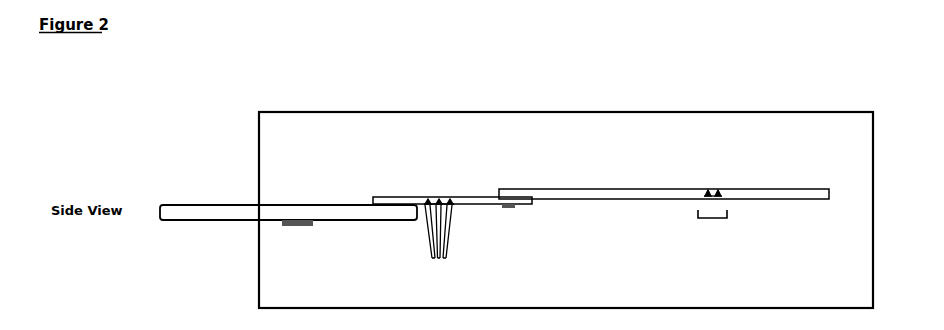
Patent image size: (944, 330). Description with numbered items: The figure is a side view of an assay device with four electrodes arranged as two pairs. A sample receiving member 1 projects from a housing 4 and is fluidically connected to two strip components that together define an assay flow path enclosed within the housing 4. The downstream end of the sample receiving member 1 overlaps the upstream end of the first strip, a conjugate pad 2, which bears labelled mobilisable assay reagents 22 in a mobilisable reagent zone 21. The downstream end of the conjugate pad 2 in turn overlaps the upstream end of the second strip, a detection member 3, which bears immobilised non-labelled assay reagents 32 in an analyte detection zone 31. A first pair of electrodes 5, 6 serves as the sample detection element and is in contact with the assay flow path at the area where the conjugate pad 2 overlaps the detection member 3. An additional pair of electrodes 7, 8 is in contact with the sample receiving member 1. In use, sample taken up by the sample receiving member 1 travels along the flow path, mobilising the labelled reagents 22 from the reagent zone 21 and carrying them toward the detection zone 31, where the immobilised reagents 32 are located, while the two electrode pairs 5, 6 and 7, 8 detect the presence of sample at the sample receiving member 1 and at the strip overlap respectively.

The sample receiving member 1 is at (348, 211).
The conjugate pad 2 is at (400, 197).
The detection member 3 is at (600, 187).
The housing 4 is at (720, 112).
The electrode 5 is at (510, 209).
The electrode 6 is at (508, 206).
The electrode 7 is at (295, 226).
The electrode 8 is at (297, 223).
The mobilisable reagent zone 21 is at (451, 192).
The labelled mobilisable assay reagents 22 is at (438, 241).
The analyte detection zone 31 is at (714, 190).
The immobilised non-labelled assay reagents 32 is at (712, 218).